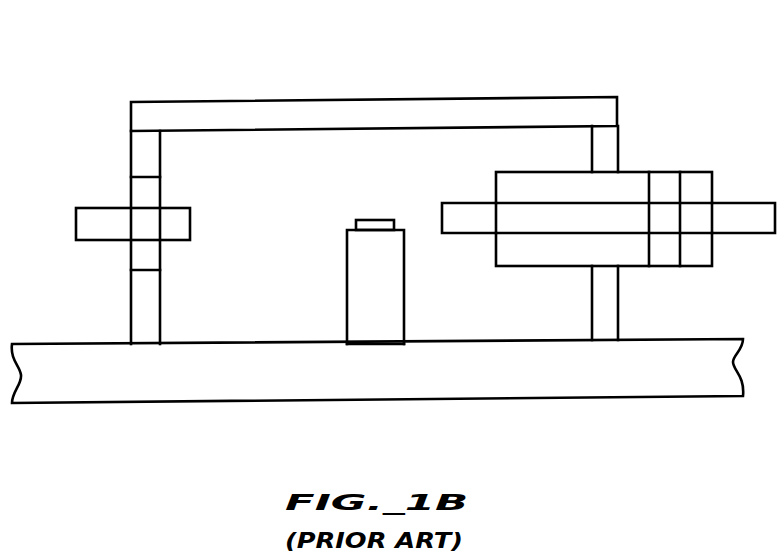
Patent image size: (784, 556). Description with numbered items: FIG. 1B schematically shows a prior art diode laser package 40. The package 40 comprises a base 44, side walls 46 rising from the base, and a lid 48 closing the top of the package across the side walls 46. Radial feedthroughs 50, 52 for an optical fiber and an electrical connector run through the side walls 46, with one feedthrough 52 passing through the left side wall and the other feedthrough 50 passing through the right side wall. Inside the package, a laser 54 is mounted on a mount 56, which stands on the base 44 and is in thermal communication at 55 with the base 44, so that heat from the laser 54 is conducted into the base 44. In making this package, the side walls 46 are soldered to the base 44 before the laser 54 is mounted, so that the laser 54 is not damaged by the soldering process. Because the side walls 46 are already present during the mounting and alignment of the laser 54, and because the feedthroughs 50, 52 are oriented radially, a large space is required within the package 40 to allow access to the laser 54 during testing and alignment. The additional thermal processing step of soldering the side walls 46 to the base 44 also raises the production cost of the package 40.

The package 40 is at (583, 73).
The base 44 is at (512, 366).
The side walls 46 is at (620, 285).
The lid 48 is at (313, 101).
The radial feedthrough 50 is at (631, 178).
The radial feedthrough 52 is at (131, 197).
The laser 54 is at (368, 219).
The thermal communication 55 is at (372, 344).
The mount 56 is at (395, 308).